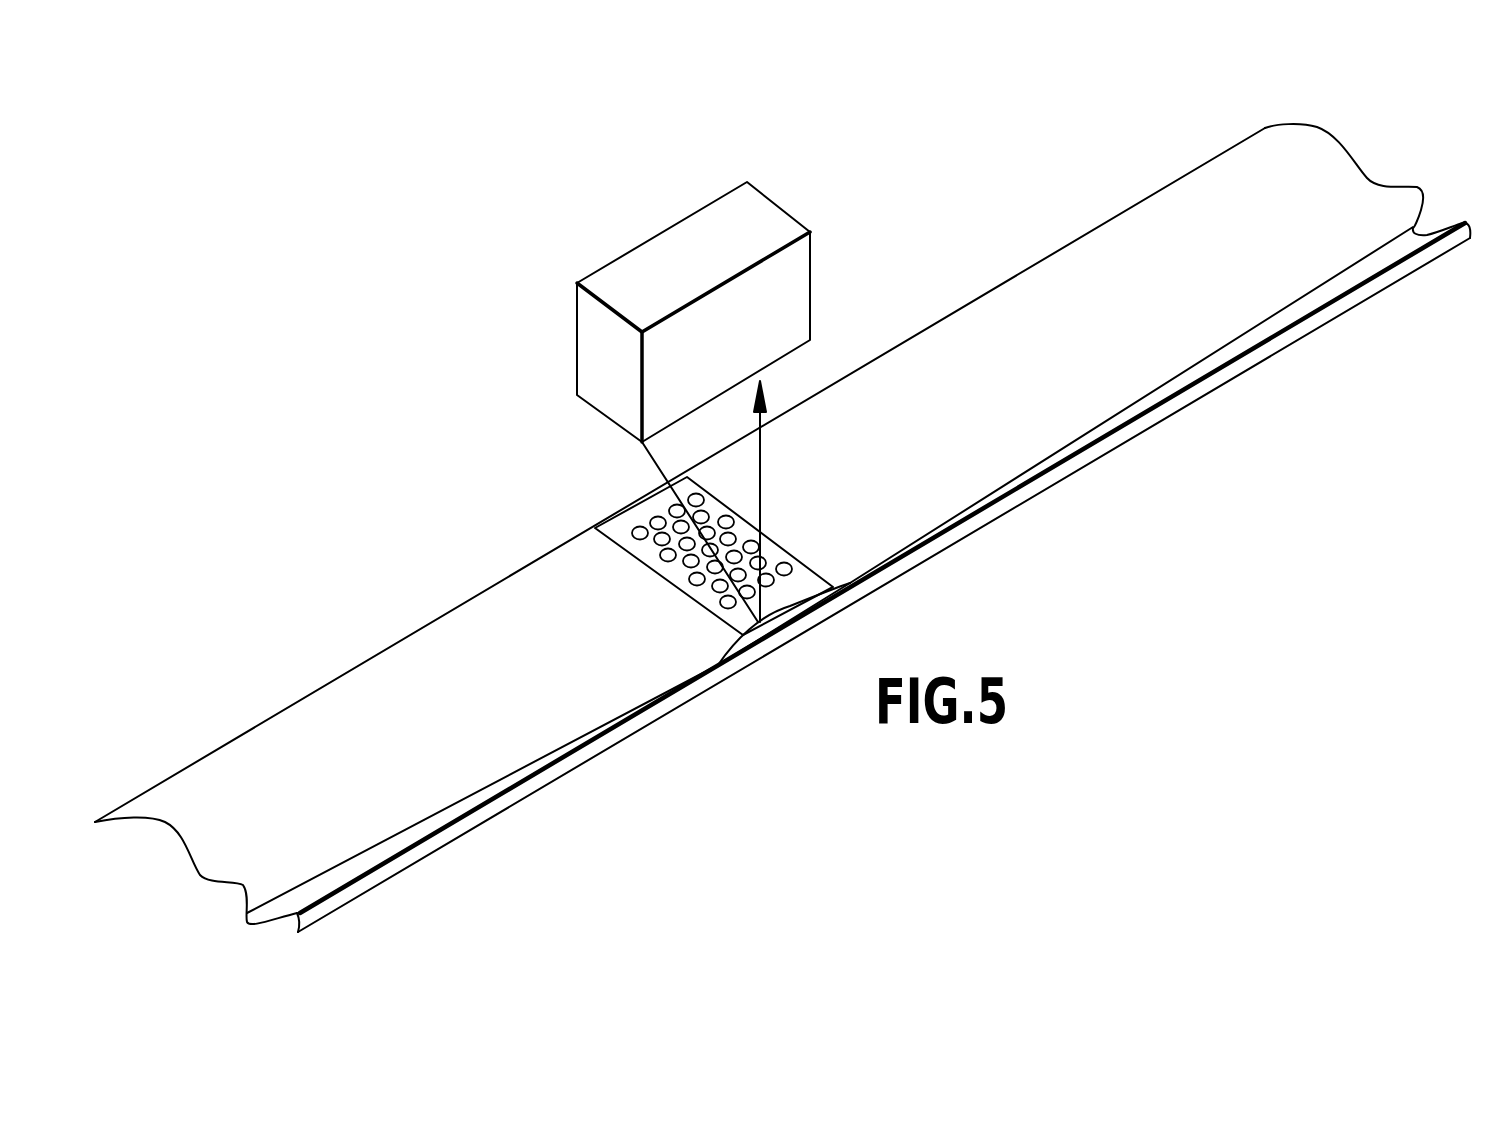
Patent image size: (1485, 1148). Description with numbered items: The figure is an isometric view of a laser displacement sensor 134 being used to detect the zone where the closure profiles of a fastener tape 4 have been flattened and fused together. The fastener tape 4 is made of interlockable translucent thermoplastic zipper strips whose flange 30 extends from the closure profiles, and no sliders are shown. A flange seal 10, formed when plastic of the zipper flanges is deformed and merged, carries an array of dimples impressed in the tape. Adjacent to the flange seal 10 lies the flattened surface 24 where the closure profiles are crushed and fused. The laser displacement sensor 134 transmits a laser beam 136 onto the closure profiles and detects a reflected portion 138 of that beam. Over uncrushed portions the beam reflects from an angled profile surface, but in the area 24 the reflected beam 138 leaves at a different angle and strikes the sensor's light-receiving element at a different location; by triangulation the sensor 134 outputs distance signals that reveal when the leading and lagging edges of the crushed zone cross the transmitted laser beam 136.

The fastener tape 4 is at (1096, 452).
The flange seal 10 is at (637, 500).
The flattened surface 24 is at (778, 630).
The flange 30 is at (343, 708).
The laser displacement sensor 134 is at (778, 190).
The laser beam 136 is at (662, 463).
The reflected portion 138 is at (762, 452).